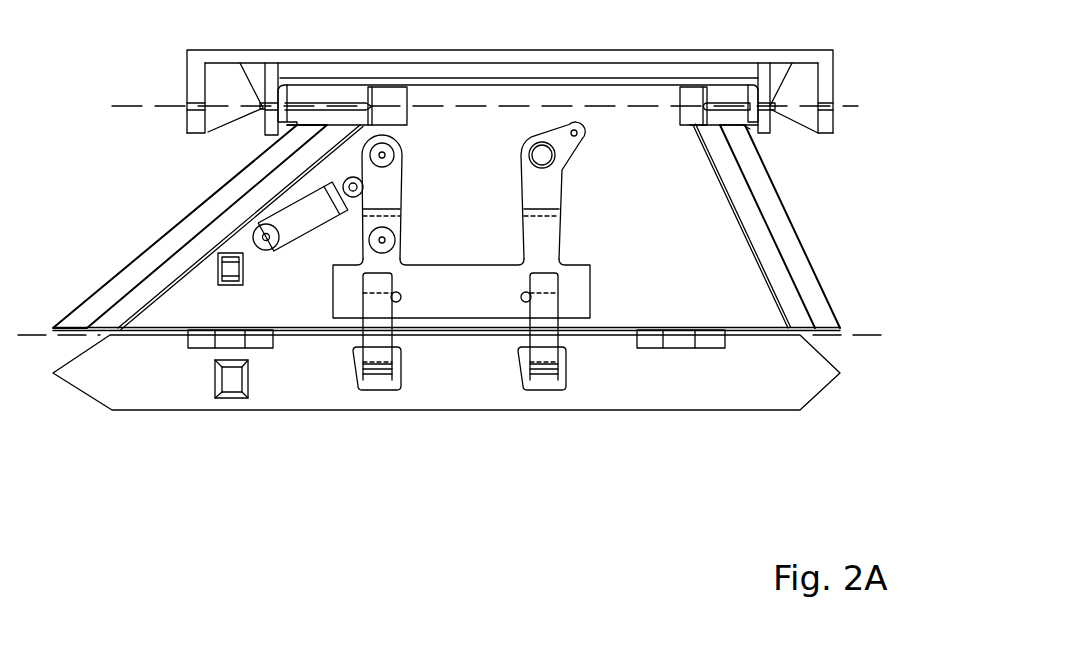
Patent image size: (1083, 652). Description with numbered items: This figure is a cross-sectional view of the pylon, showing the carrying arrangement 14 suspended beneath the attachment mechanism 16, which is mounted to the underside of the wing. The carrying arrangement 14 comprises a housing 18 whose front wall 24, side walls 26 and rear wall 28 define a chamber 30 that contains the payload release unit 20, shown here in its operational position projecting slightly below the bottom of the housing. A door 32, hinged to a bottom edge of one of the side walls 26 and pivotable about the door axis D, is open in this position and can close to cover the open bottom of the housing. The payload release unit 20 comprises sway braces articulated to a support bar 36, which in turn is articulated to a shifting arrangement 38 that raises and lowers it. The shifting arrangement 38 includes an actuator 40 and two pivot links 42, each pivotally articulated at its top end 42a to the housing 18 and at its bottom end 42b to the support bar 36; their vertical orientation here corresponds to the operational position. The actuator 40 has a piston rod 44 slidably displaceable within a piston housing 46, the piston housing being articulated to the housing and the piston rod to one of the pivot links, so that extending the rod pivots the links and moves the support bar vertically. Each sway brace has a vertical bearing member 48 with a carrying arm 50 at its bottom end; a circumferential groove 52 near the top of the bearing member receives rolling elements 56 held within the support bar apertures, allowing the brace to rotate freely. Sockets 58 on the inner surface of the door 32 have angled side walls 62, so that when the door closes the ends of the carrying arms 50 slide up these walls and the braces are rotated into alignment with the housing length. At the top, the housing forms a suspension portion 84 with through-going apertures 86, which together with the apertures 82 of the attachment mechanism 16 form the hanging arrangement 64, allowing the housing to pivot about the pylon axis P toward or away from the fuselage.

The carrying arrangement 14 is at (182, 200).
The attachment mechanism 16 is at (165, 55).
The housing 18 is at (813, 223).
The payload release unit 20 is at (576, 200).
The front wall 24 is at (162, 253).
The side wall 26 is at (713, 242).
The rear wall 28 is at (800, 268).
The chamber 30 is at (737, 287).
The door 32 is at (703, 390).
The support bar 36 is at (485, 307).
The shifting arrangement 38 is at (378, 402).
The actuator 40 is at (270, 220).
The pivot link 42 is at (408, 193).
The top end 42a is at (400, 147).
The bottom end 42b is at (388, 236).
The piston rod 44 is at (330, 187).
The piston housing 46 is at (308, 233).
The vertical bearing member 48 is at (380, 332).
The carrying arm 50 is at (388, 391).
The circumferential groove 52 is at (370, 297).
The rolling element 56 is at (398, 296).
The socket 58 is at (393, 368).
The side wall 62 is at (375, 395).
The hanging arrangement 64 is at (818, 40).
The through-going aperture 82 is at (771, 114).
The suspension portion 84 is at (692, 95).
The through-going aperture 86 is at (747, 100).
The pylon axis P is at (873, 106).
The door axis D is at (866, 335).